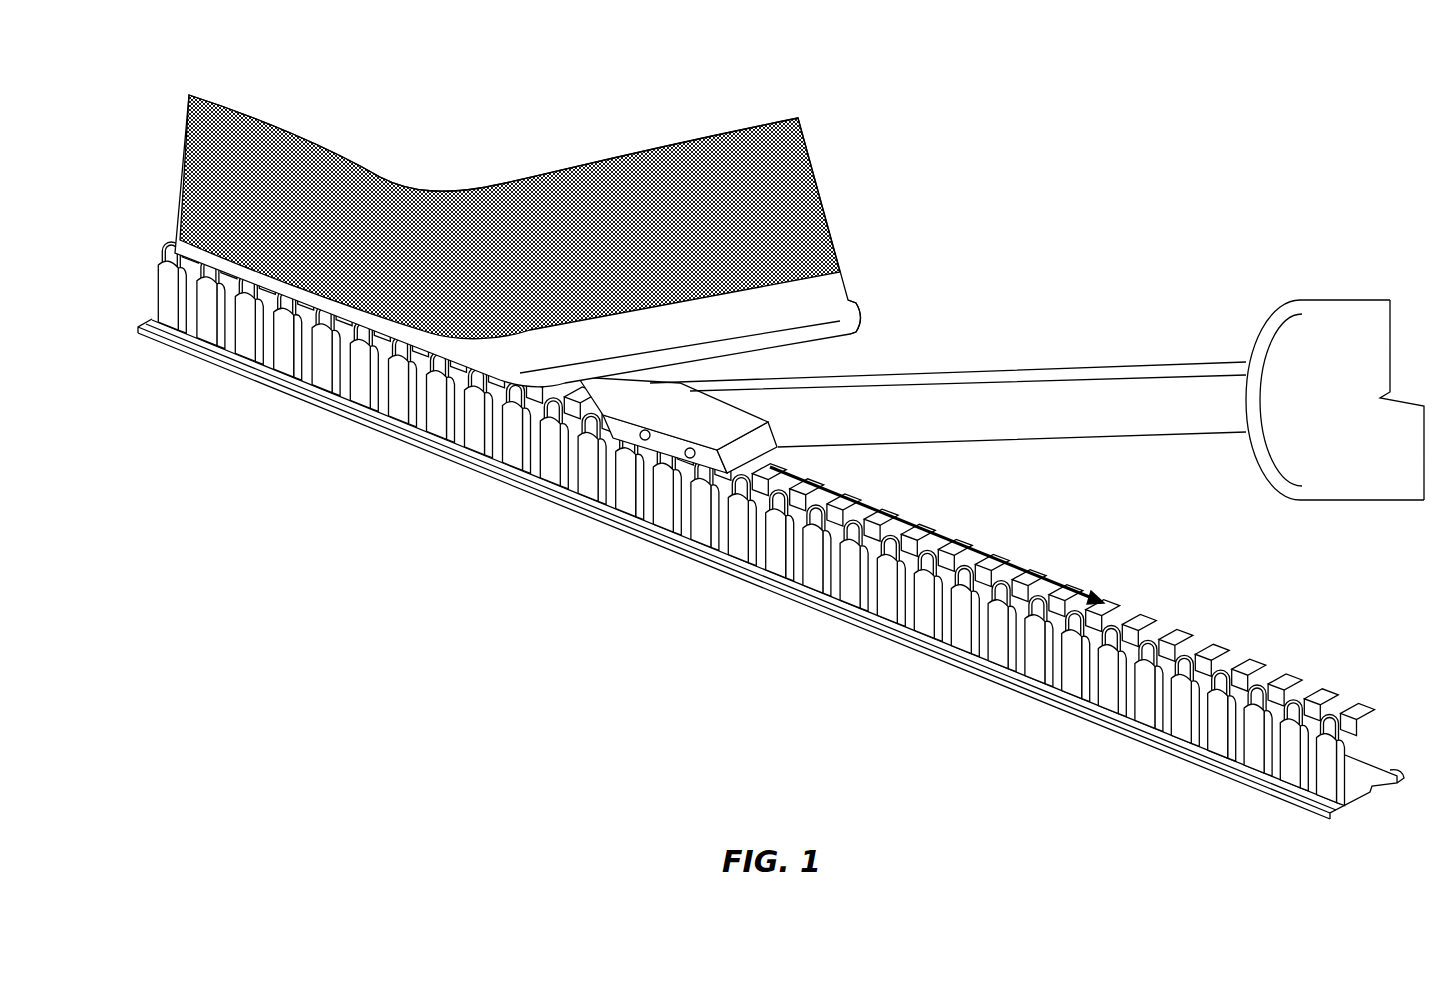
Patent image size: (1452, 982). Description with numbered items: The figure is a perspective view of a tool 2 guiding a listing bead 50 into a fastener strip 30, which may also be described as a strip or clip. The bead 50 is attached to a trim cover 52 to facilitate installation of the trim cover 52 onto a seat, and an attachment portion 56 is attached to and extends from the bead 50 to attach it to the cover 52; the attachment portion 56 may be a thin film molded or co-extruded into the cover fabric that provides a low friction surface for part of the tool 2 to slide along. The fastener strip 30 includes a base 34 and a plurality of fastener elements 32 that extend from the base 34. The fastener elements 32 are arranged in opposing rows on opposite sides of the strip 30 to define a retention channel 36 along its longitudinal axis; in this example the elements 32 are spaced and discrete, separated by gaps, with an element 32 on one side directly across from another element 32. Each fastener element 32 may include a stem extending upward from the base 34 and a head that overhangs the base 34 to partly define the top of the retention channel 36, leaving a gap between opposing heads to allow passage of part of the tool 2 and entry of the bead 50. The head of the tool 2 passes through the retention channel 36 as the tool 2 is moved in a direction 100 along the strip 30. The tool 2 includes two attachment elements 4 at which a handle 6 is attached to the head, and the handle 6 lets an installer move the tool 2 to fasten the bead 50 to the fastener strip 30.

The tool 2 is at (770, 491).
The attachment elements 4 is at (690, 458).
The handle 6 is at (1120, 384).
The fastener strip 30 is at (795, 549).
The fastener elements 32 is at (386, 438).
The base 34 is at (1350, 790).
The retention channel 36 is at (1398, 784).
The listing bead 50 is at (858, 320).
The trim cover 52 is at (560, 241).
The attachment portion 56 is at (823, 287).
The direction 100 is at (1046, 546).